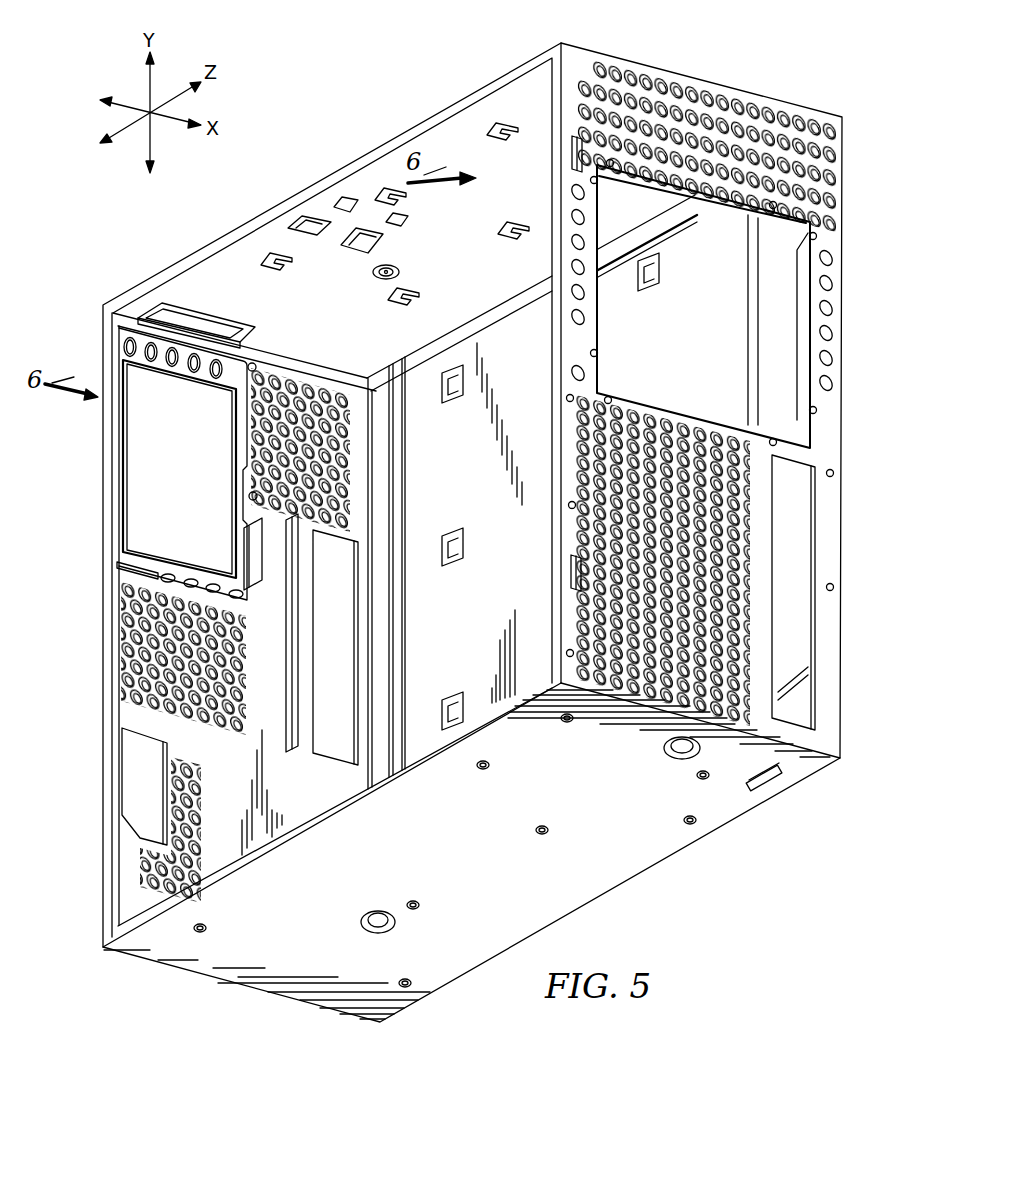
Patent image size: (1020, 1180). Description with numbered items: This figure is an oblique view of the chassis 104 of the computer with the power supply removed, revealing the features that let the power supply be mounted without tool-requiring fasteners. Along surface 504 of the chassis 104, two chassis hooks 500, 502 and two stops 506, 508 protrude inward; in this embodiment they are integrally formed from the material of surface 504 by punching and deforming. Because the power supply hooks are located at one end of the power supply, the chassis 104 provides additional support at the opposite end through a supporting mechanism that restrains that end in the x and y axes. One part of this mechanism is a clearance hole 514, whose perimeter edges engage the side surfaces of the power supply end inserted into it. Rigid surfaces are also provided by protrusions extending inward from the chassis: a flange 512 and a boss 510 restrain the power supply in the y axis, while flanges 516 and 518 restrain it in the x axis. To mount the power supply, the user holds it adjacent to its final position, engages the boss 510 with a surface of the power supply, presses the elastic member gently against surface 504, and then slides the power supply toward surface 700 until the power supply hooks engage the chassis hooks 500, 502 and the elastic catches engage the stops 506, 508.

The chassis 104 is at (534, 60).
The chassis hook 500 is at (242, 228).
The chassis hook 502 is at (362, 254).
The surface 504 is at (462, 133).
The stop 506 is at (349, 197).
The stop 508 is at (401, 222).
The boss 510 is at (205, 318).
The flange 512 is at (147, 570).
The clearance hole 514 is at (201, 433).
The flange 516 is at (122, 481).
The flange 518 is at (245, 546).
The surface 700 is at (120, 700).